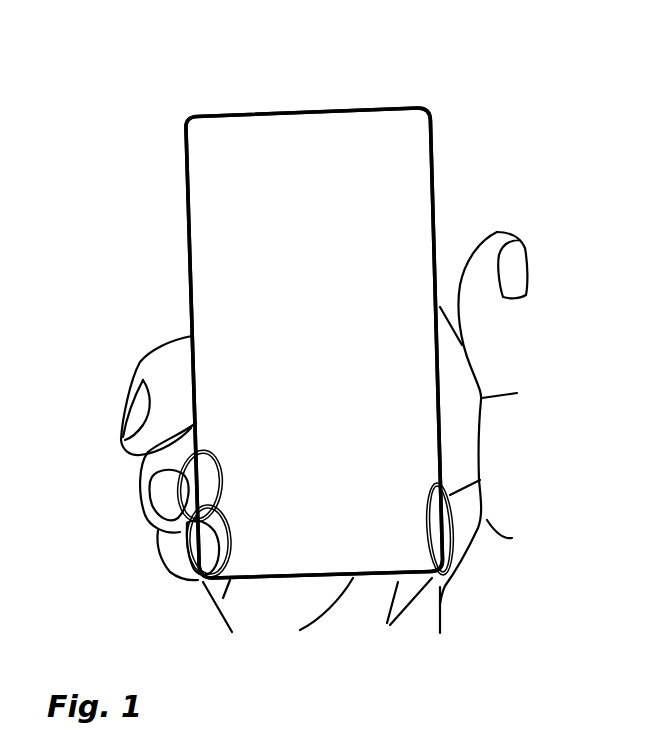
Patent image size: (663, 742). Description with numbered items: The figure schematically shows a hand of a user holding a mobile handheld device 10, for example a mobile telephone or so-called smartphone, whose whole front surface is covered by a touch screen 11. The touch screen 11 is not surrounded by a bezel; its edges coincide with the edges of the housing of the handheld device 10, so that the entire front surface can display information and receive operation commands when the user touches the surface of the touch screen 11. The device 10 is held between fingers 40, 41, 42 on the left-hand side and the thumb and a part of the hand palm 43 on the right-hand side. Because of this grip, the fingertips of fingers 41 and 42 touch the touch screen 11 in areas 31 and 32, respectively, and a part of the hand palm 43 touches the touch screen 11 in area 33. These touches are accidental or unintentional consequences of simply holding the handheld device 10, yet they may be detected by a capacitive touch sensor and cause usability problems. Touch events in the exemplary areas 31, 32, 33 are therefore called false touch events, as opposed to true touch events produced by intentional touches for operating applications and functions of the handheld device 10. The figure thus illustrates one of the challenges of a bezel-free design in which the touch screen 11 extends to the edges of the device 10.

The mobile handheld device 10 is at (190, 115).
The touch screen 11 is at (405, 168).
The area 31 is at (218, 463).
The area 32 is at (232, 537).
The area 33 is at (433, 508).
The finger 40 is at (148, 363).
The finger 41 is at (160, 497).
The finger 42 is at (178, 555).
The thumb and part of the hand palm 43 is at (462, 547).